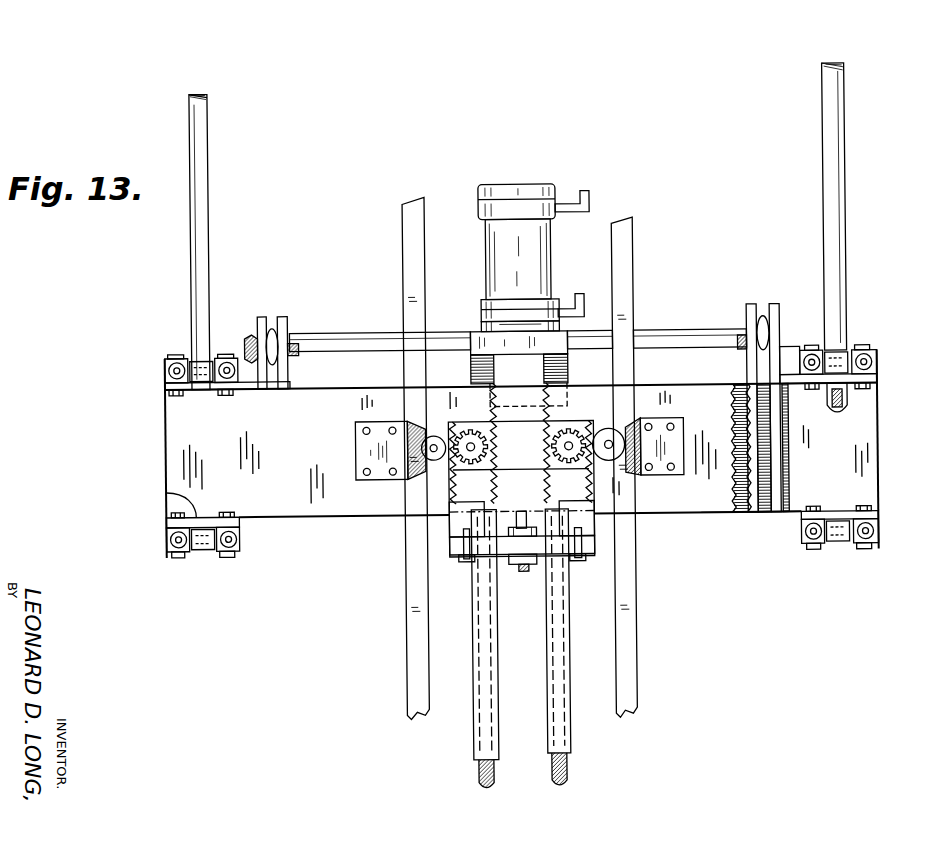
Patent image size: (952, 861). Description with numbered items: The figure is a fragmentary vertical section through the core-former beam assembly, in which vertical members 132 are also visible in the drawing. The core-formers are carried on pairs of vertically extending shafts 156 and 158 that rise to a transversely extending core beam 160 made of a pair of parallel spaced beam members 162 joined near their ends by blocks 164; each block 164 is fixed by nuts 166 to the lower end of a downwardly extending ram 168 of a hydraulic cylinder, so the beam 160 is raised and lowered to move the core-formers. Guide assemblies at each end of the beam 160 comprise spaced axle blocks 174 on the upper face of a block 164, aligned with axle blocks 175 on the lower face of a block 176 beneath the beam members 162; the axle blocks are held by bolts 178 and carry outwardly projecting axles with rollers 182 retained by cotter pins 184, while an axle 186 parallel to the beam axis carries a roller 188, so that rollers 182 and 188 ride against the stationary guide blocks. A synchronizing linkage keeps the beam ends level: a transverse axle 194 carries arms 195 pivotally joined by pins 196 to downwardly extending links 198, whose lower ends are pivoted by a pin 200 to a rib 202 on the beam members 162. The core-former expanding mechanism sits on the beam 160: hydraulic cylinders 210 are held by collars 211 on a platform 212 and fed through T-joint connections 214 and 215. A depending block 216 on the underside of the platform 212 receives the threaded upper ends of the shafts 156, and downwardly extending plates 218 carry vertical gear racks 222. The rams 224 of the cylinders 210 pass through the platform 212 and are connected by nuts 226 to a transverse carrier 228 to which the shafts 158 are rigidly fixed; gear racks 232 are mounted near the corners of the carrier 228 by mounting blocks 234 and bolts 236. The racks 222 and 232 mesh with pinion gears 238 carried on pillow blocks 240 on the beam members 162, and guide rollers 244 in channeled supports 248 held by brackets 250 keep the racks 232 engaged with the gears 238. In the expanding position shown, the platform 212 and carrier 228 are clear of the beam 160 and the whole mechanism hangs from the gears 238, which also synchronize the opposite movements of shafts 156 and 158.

The upright post 132 is at (634, 288).
The shafts 156 is at (547, 562).
The shafts 158 is at (474, 731).
The core beam 160 is at (711, 533).
The beam members 162 is at (163, 425).
The blocks 164 is at (178, 389).
The nuts 166 is at (848, 406).
The ram 168 is at (192, 310).
The axle blocks 174 is at (165, 364).
The axle blocks 175 is at (165, 533).
The block 176 is at (164, 494).
The bolts 178 is at (232, 397).
The roller 182 is at (226, 357).
The cotter pin 184 is at (231, 371).
The axle 186 is at (215, 553).
The roller 188 is at (205, 372).
The axle 194 is at (711, 335).
The arms 195 is at (268, 322).
The pins 196 is at (294, 354).
The links 198 is at (288, 323).
The pin 200 is at (741, 506).
The rib 202 is at (766, 485).
The hydraulic cylinders 210 is at (531, 189).
The collars 211 is at (480, 331).
The platform 212 is at (477, 350).
The T-joint connection 214 is at (577, 206).
The T-joint connection 215 is at (569, 312).
The depending block 216 is at (569, 372).
The plates 218 is at (533, 447).
The gear racks 222 is at (554, 427).
The rams 224 is at (521, 515).
The nuts 226 is at (520, 569).
The carrier 228 is at (594, 560).
The gear rack 232 is at (587, 481).
The mounting blocks 234 is at (468, 508).
The bolts 236 is at (461, 563).
The pinion gears 238 is at (573, 447).
The pillow blocks 240 is at (466, 428).
The guide rollers 244 is at (427, 469).
The channeled support 248 is at (414, 423).
The bracket 250 is at (355, 445).